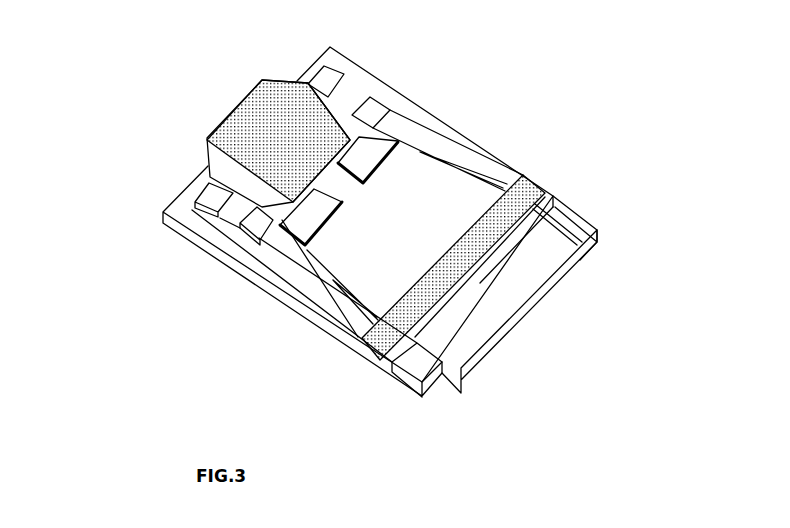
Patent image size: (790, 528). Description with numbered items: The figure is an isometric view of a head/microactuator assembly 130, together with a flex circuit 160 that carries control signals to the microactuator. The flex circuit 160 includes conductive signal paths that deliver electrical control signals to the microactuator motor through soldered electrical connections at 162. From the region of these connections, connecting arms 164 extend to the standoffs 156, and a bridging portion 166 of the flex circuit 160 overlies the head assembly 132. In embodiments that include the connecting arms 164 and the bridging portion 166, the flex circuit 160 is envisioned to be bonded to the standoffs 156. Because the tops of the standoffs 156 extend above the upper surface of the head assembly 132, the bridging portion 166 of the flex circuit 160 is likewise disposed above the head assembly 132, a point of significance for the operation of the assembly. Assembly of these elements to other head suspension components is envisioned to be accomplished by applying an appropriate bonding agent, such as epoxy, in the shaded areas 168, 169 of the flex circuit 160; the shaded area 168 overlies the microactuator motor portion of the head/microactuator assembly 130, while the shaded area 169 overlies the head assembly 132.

The head/microactuator assembly 130 is at (434, 118).
The head assembly 132 is at (473, 333).
The standoffs 156 is at (557, 198).
The flex circuit 160 is at (207, 154).
The soldered electrical connections 162 is at (373, 114).
The connecting arms 164 is at (466, 158).
The bridging portion 166 is at (476, 279).
The shaded area 168 is at (257, 127).
The shaded area 169 is at (493, 222).